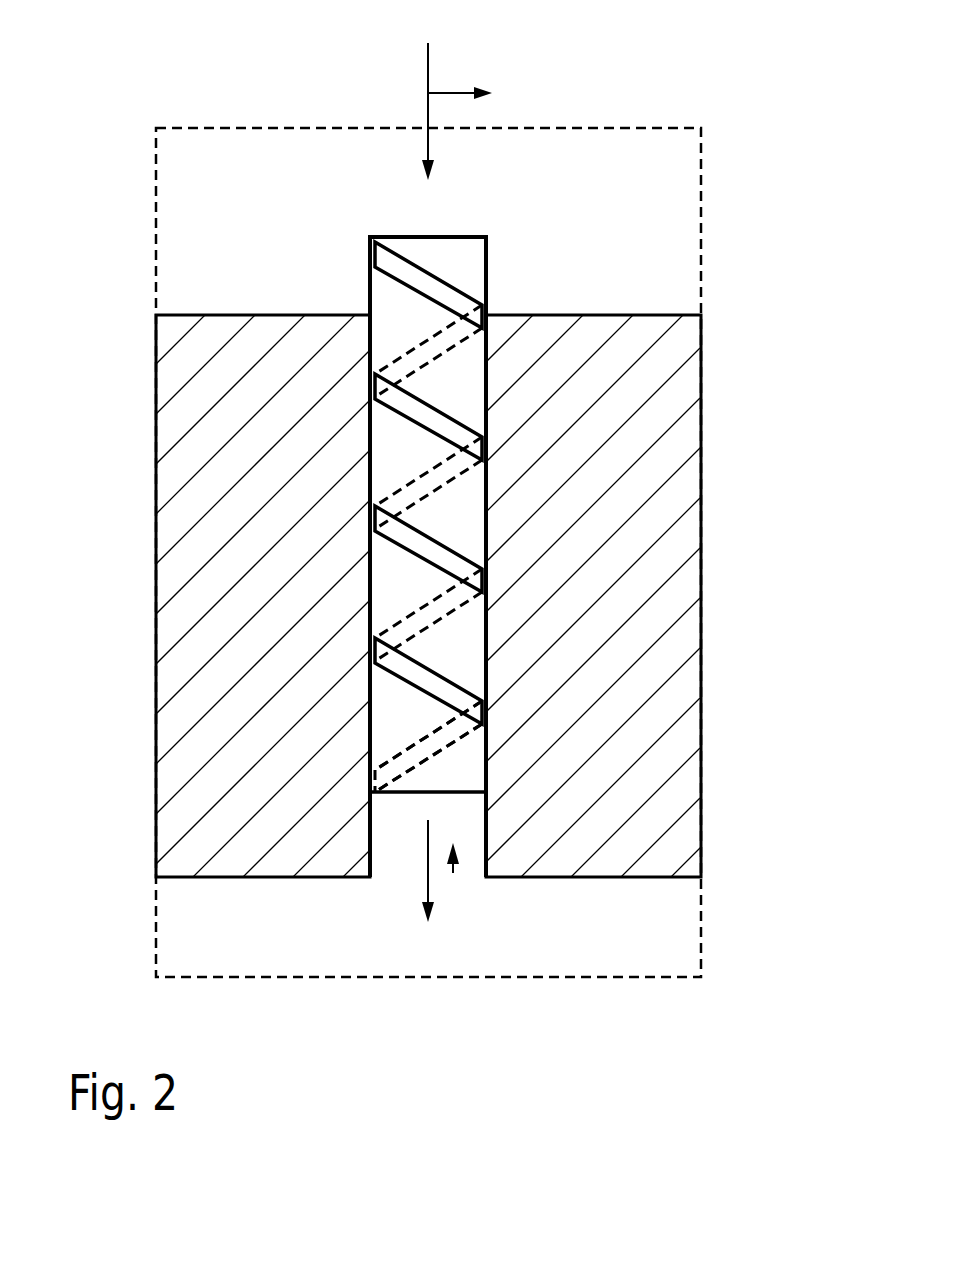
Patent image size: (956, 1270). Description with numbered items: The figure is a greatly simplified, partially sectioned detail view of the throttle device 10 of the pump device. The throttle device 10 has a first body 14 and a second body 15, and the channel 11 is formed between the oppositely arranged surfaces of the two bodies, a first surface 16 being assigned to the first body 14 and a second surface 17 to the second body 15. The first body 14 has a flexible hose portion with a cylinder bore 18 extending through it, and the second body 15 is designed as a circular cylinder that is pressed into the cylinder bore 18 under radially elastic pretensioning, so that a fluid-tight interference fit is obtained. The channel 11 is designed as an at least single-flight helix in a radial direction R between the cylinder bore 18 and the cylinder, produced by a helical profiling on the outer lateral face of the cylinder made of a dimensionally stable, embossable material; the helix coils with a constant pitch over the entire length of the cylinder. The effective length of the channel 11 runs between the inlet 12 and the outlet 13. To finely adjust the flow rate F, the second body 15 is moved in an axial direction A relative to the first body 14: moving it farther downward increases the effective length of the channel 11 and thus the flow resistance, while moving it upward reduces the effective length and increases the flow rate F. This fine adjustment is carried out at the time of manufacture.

The throttle device 10 is at (701, 178).
The channel 11 is at (400, 425).
The inlet 12 is at (500, 302).
The outlet 13 is at (350, 770).
The first body 14 is at (176, 380).
The second body 15 is at (452, 241).
The first surface 16 is at (482, 381).
The second surface 17 is at (487, 418).
The cylinder bore 18 is at (453, 873).
The axial direction A is at (428, 93).
The radial direction R is at (456, 93).
The flow rate F is at (428, 862).